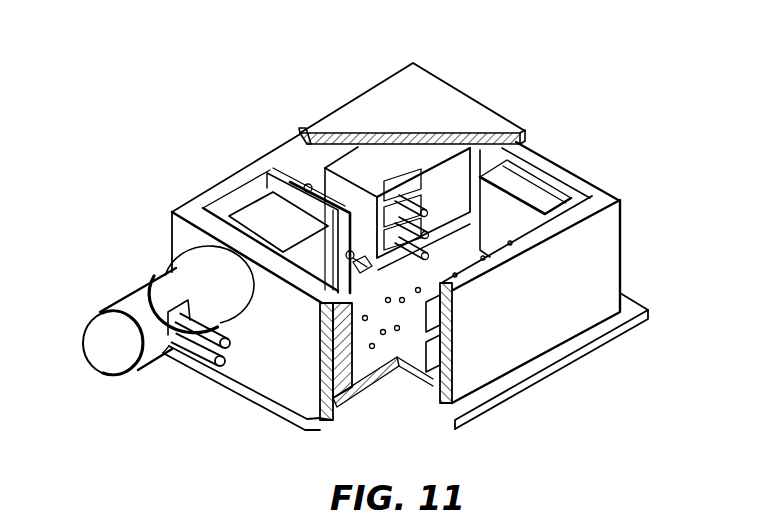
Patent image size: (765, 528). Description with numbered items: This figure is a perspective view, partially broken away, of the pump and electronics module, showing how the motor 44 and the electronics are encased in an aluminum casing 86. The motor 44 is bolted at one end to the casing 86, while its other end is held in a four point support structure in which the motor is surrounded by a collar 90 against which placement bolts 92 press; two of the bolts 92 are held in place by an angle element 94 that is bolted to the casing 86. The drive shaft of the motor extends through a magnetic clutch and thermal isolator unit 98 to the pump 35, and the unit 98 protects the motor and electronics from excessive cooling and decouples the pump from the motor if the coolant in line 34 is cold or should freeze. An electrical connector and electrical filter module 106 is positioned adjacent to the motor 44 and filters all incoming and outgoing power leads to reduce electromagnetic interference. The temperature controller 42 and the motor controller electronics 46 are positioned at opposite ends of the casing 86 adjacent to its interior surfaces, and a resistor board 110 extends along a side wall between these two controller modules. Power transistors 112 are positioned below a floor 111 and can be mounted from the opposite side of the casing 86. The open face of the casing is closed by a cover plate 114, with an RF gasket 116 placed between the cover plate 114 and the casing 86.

The cover plate 114 is at (471, 115).
The RF gasket 116 is at (297, 139).
The motor 44 is at (169, 213).
The motor controller electronics 46 is at (358, 341).
The aluminum casing 86 is at (277, 421).
The power transistors 112 is at (428, 381).
The floor 111 is at (355, 387).
The resistor board 110 is at (430, 386).
The temperature controller 42 is at (550, 190).
The electrical connector and electrical filter module 106 is at (378, 184).
The placement bolts 92 is at (298, 181).
The collar 90 is at (230, 213).
The angle element 94 is at (268, 194).
The pump 35 is at (126, 295).
The magnetic clutch and thermal isolator unit 98 is at (242, 329).
The line 34 is at (232, 351).